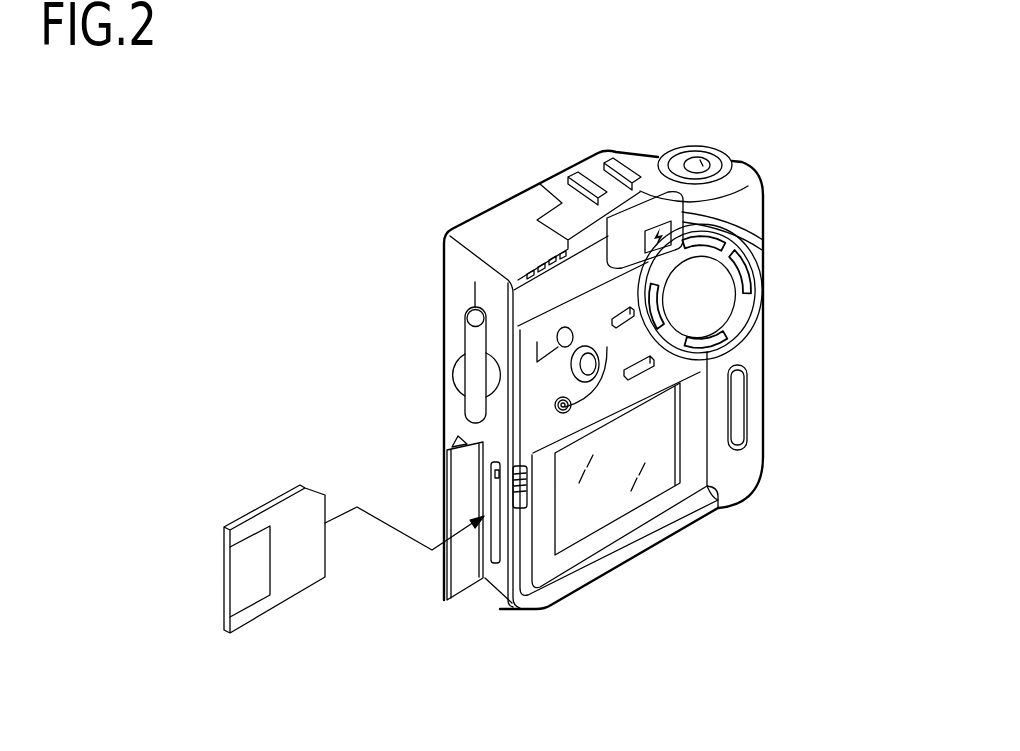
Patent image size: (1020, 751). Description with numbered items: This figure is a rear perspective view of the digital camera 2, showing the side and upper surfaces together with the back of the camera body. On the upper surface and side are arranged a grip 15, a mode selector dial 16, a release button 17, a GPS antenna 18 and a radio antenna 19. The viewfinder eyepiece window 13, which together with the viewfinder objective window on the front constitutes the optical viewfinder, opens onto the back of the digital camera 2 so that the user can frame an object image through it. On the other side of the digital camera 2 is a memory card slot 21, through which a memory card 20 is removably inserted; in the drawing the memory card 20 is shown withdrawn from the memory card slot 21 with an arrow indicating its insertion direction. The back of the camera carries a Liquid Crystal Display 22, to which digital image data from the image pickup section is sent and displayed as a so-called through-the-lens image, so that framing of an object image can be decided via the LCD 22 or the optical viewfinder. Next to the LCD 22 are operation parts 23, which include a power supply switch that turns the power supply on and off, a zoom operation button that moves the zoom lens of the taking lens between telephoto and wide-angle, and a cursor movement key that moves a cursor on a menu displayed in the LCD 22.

The digital camera 2 is at (457, 229).
The viewfinder eyepiece window 13 is at (672, 236).
The grip 15 is at (742, 356).
The mode selector dial 16 is at (673, 160).
The release button 17 is at (697, 163).
The GPS antenna 18 is at (578, 165).
The radio antenna 19 is at (568, 184).
The memory card 20 is at (278, 498).
The memory card slot 21 is at (490, 566).
The Liquid Crystal Display (LCD) 22 is at (600, 493).
The operation parts 23 is at (555, 405).